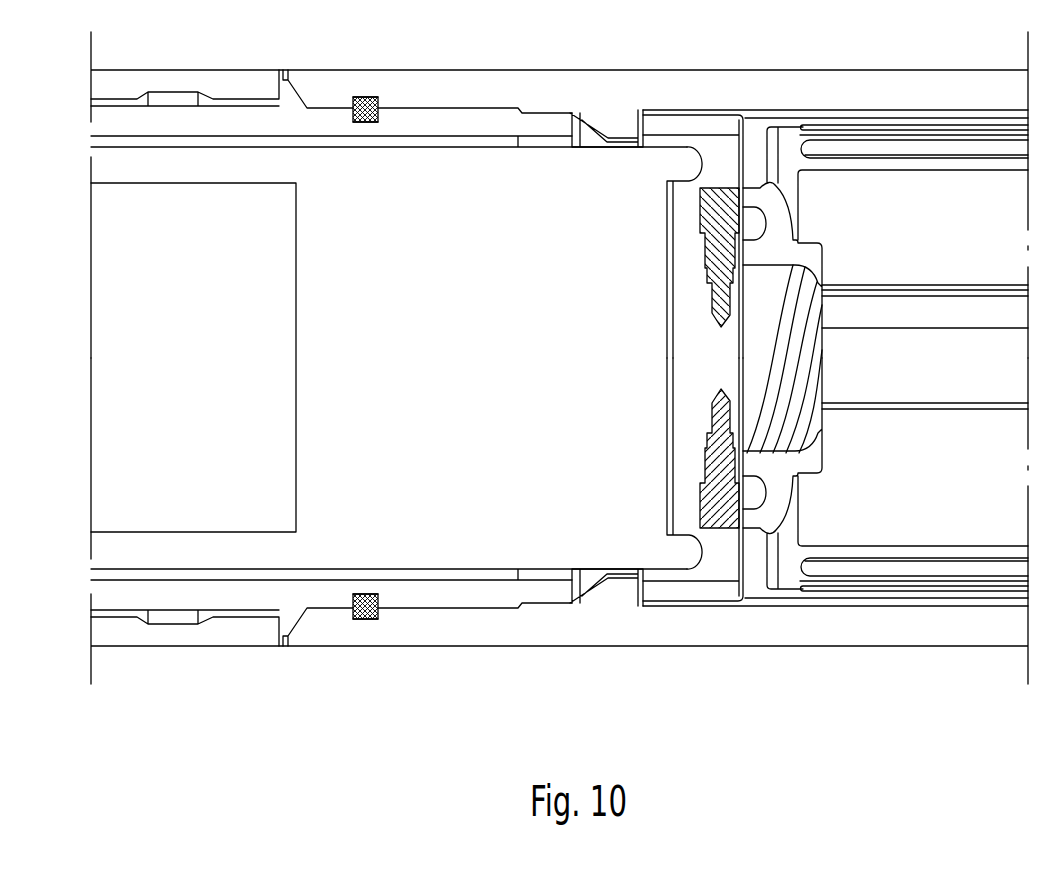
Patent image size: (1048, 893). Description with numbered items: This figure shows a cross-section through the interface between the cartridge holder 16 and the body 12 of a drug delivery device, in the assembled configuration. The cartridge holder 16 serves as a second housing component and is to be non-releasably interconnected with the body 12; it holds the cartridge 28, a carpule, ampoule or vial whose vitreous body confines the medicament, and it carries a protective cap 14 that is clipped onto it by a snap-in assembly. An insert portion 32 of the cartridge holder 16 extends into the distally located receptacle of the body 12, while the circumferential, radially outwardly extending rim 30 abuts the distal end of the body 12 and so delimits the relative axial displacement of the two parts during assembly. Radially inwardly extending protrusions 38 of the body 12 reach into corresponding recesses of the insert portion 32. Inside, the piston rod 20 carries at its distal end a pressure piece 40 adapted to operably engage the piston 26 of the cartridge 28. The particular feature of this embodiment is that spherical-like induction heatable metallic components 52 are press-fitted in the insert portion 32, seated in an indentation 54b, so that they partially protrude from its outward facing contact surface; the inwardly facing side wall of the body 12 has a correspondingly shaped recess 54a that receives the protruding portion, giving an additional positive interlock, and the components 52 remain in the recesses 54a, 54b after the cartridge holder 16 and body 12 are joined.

The body 12 is at (670, 83).
The protective cap 14 is at (243, 83).
The cartridge holder 16 is at (120, 120).
The piston rod 20 is at (772, 280).
The piston 26 is at (117, 273).
The cartridge 28 is at (170, 165).
The rim 30 is at (285, 82).
The insert portion 32 is at (485, 123).
The protrusion 38 is at (617, 123).
The pressure piece 40 is at (721, 205).
The induction heatable component 52 is at (362, 97).
The recess 54a is at (380, 98).
The indentation 54b is at (380, 121).